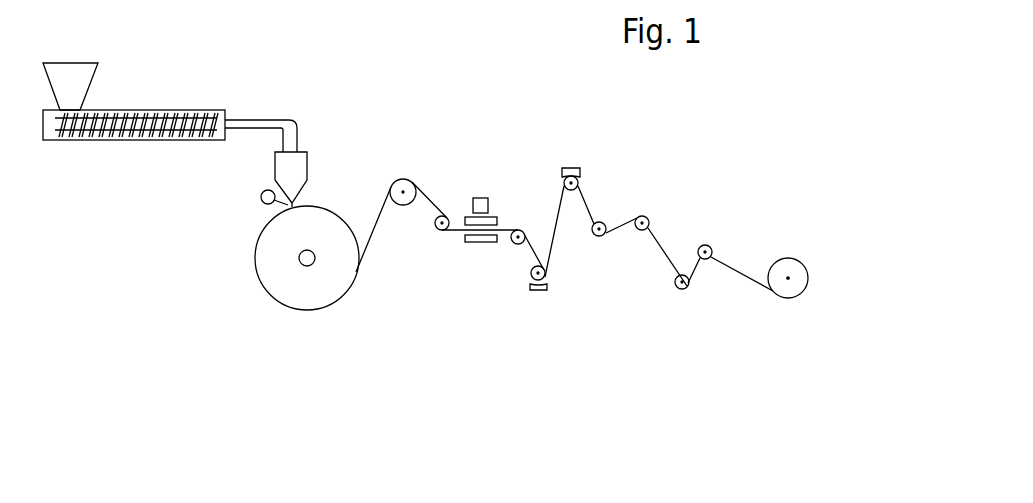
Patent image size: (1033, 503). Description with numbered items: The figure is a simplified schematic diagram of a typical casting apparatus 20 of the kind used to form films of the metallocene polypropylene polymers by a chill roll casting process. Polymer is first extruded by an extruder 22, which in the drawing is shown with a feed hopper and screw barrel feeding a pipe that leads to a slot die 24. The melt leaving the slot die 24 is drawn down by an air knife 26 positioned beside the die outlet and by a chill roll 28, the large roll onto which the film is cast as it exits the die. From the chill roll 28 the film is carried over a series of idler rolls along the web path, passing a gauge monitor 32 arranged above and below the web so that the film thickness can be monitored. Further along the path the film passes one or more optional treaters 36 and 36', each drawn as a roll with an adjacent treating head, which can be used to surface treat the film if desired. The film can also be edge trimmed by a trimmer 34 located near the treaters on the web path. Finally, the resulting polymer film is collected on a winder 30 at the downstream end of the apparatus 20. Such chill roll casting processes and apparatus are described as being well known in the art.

The casting apparatus 20 is at (287, 345).
The extruder 22 is at (155, 109).
The slot die 24 is at (302, 168).
The air knife 26 is at (260, 200).
The chill roll 28 is at (285, 290).
The winder 30 is at (786, 299).
The gauge monitor 32 is at (481, 198).
The trimmer 34 is at (649, 208).
The treater 36 is at (519, 305).
The treater 36' is at (597, 159).